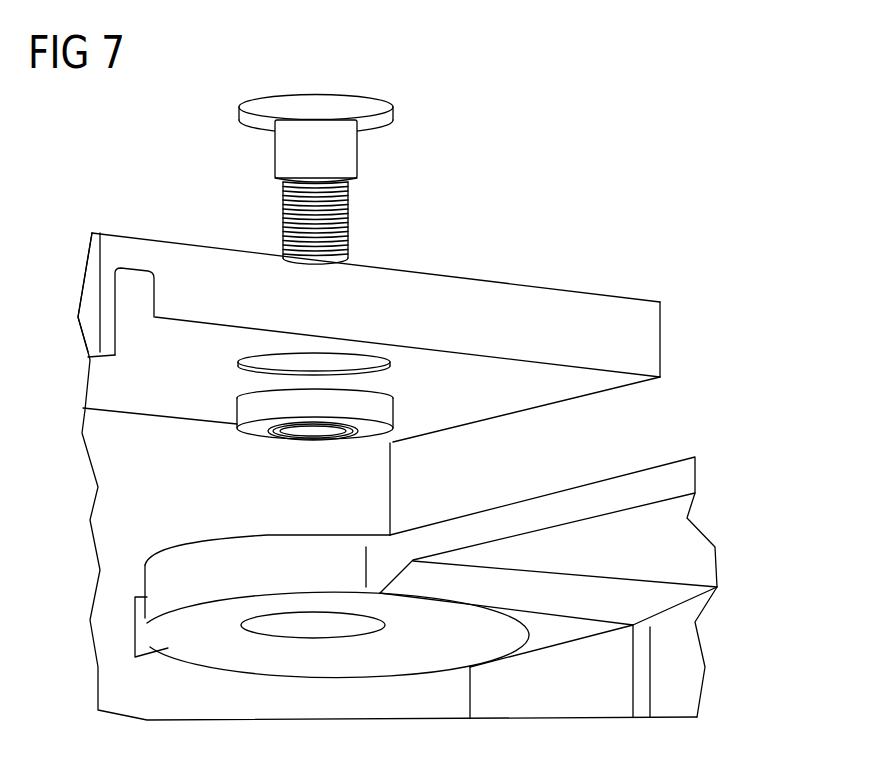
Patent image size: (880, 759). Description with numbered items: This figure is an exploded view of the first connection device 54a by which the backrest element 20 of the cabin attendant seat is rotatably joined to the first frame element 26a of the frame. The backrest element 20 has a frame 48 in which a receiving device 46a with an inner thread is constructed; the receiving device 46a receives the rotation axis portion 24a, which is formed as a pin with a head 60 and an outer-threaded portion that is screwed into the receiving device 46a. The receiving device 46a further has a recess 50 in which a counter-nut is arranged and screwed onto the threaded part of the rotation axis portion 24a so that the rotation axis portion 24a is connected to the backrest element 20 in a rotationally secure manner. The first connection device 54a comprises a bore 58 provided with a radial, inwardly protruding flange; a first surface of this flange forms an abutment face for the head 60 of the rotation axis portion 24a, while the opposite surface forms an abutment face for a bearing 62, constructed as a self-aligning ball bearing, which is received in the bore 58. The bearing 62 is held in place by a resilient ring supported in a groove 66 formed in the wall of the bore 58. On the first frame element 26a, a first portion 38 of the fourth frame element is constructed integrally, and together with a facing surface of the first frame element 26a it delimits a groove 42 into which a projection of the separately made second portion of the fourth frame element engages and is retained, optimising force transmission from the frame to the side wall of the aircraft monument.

The backrest element 20 is at (706, 511).
The rotation axis portion 24a is at (345, 154).
The first frame element 26a is at (558, 306).
The first portion of the fourth frame element 38 is at (92, 326).
The groove 42 is at (135, 298).
The receiving device 46a is at (283, 643).
The frame of the backrest element 48 is at (684, 577).
The recess 50 is at (353, 628).
The first connection device 54a is at (437, 263).
The bore 58 is at (300, 362).
The head 60 is at (392, 110).
The bearing 62 is at (237, 412).
The groove 66 is at (385, 376).